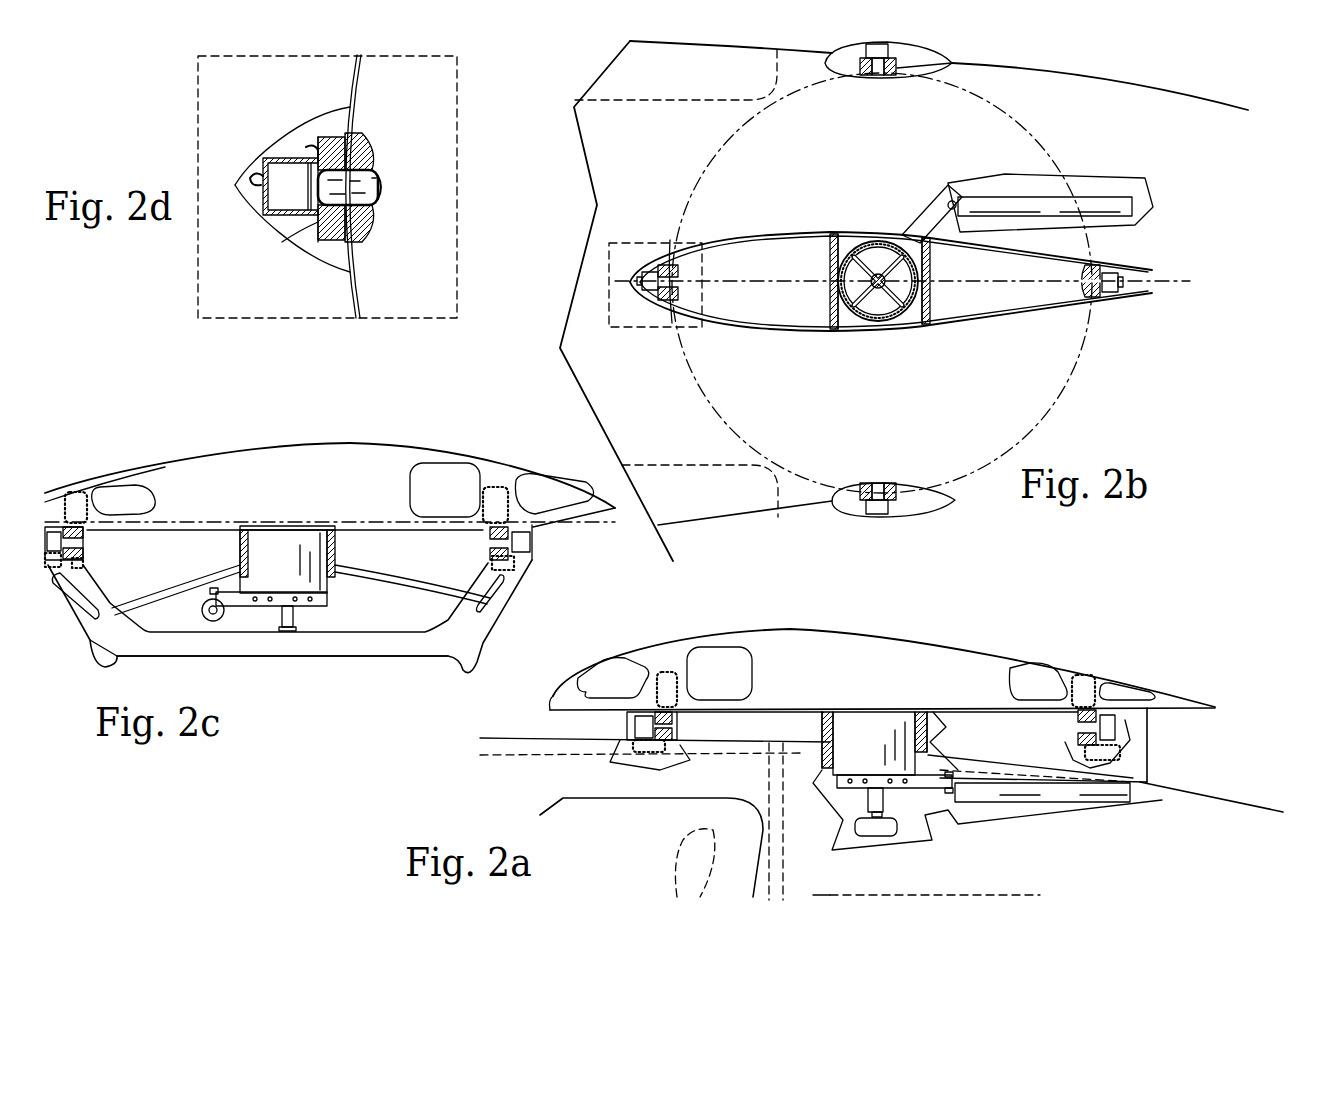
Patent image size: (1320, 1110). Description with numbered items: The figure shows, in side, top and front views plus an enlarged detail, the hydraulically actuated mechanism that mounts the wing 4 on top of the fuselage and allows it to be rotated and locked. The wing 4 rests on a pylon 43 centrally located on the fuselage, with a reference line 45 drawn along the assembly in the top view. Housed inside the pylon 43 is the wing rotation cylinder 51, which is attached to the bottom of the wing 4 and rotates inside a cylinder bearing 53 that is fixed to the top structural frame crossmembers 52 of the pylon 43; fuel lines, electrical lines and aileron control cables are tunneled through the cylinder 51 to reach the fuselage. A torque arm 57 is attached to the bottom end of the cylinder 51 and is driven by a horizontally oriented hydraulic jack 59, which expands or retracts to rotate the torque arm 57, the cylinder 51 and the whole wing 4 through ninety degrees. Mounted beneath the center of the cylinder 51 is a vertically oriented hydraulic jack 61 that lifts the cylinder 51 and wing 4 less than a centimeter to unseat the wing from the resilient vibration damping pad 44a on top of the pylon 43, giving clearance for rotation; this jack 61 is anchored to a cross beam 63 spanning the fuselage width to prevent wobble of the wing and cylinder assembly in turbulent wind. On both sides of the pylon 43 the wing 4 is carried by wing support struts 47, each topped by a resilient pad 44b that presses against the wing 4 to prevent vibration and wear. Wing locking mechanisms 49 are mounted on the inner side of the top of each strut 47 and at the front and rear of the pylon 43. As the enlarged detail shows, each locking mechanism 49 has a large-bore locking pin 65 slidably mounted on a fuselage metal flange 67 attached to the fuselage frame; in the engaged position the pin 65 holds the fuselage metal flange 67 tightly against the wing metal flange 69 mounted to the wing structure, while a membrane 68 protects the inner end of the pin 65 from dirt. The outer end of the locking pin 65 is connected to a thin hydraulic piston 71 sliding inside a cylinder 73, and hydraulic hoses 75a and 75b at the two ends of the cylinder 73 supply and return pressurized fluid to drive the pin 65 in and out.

In FIG. 2c, the wing 4 is at (382, 430).
In FIG. 2a, the wing 4 is at (840, 620).
In FIG. 2b, the pylon 43 is at (772, 346).
In FIG. 2c, the pylon 43 is at (352, 545).
In FIG. 2a, the pylon 43 is at (905, 745).
In FIG. 2c, the resilient vibration damping pad 44a is at (283, 528).
In FIG. 2a, the resilient vibration damping pad 44a is at (757, 707).
In FIG. 2c, the resilient pad 44b is at (62, 520).
In FIG. 2b, the blade axis 45 is at (790, 281).
In FIG. 2b, the wing support strut 47 is at (855, 515).
In FIG. 2c, the wing support strut 47 is at (482, 622).
In FIG. 2d, the wing locking mechanism 49 is at (398, 117).
In FIG. 2b, the wing locking mechanism 49 is at (690, 256).
In FIG. 2c, the wing locking mechanism 49 is at (92, 541).
In FIG. 2a, the wing locking mechanism 49 is at (683, 728).
In FIG. 2b, the wing rotation cylinder 51 is at (895, 318).
In FIG. 2c, the wing rotation cylinder 51 is at (258, 545).
In FIG. 2a, the wing rotation cylinder 51 is at (862, 735).
In FIG. 2b, the structural frame crossmembers 52 is at (834, 236).
In FIG. 2a, the structural frame crossmembers 52 is at (822, 716).
In FIG. 2b, the cylinder bearing 53 is at (860, 318).
In FIG. 2c, the cylinder bearing 53 is at (334, 528).
In FIG. 2a, the cylinder bearing 53 is at (908, 712).
In FIG. 2b, the torque arm 57 is at (945, 230).
In FIG. 2c, the torque arm 57 is at (226, 604).
In FIG. 2a, the torque arm 57 is at (925, 785).
In FIG. 2b, the horizontally oriented hydraulic jack 59 is at (1000, 206).
In FIG. 2c, the horizontally oriented hydraulic jack 59 is at (203, 614).
In FIG. 2a, the horizontally oriented hydraulic jack 59 is at (1008, 791).
In FIG. 2c, the vertically oriented hydraulic jack 61 is at (294, 620).
In FIG. 2a, the vertically oriented hydraulic jack 61 is at (868, 818).
In FIG. 2c, the cross beam 63 is at (340, 656).
In FIG. 2a, the cross beam 63 is at (878, 836).
In FIG. 2d, the locking pin 65 is at (362, 186).
In FIG. 2d, the fuselage metal flange 67 is at (330, 228).
In FIG. 2d, the membrane 68 is at (382, 192).
In FIG. 2d, the wing metal flange 69 is at (360, 226).
In FIG. 2d, the hydraulic piston 71 is at (309, 190).
In FIG. 2d, the cylinder 73 is at (283, 156).
In FIG. 2d, the hydraulic hose 75a is at (312, 148).
In FIG. 2d, the hydraulic hose 75b is at (257, 178).